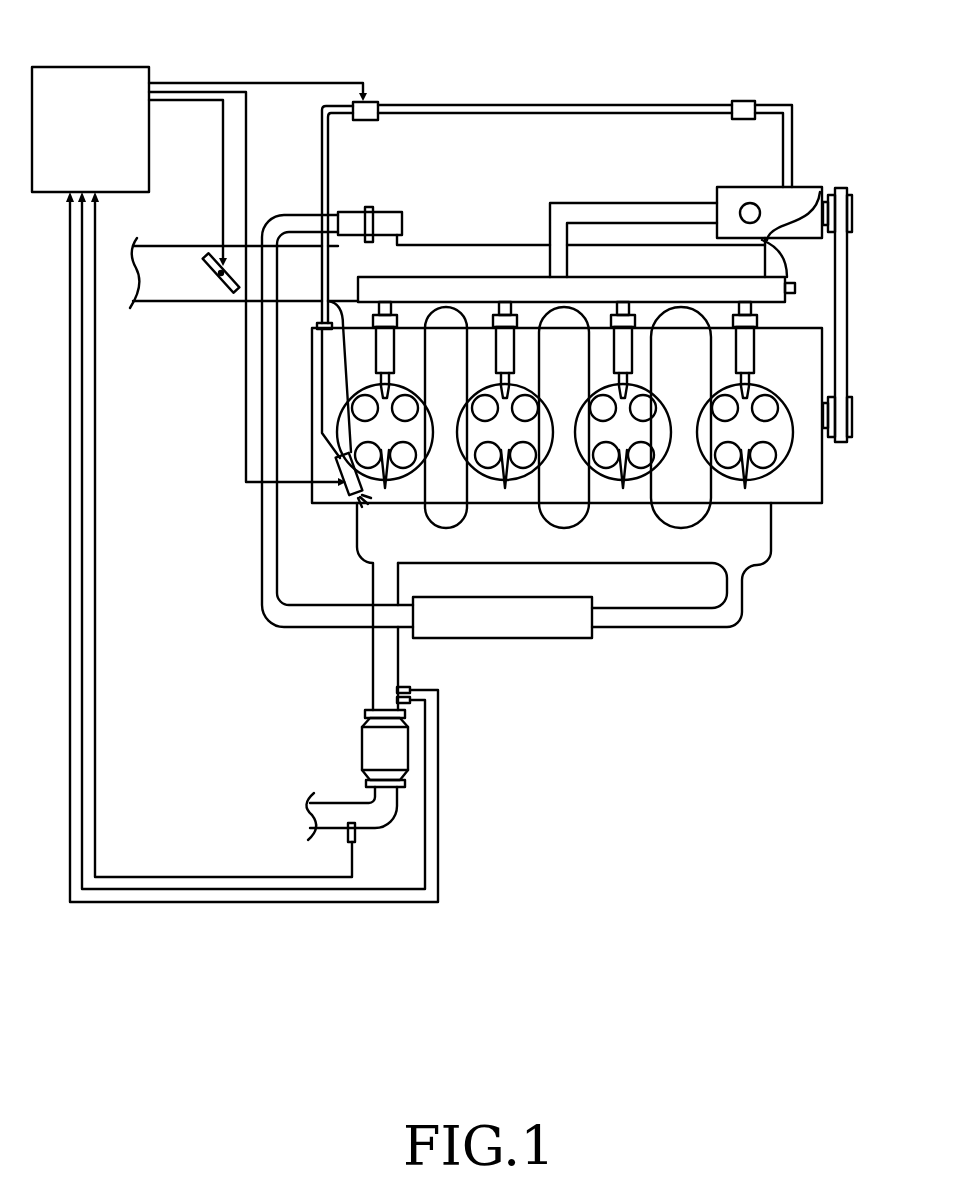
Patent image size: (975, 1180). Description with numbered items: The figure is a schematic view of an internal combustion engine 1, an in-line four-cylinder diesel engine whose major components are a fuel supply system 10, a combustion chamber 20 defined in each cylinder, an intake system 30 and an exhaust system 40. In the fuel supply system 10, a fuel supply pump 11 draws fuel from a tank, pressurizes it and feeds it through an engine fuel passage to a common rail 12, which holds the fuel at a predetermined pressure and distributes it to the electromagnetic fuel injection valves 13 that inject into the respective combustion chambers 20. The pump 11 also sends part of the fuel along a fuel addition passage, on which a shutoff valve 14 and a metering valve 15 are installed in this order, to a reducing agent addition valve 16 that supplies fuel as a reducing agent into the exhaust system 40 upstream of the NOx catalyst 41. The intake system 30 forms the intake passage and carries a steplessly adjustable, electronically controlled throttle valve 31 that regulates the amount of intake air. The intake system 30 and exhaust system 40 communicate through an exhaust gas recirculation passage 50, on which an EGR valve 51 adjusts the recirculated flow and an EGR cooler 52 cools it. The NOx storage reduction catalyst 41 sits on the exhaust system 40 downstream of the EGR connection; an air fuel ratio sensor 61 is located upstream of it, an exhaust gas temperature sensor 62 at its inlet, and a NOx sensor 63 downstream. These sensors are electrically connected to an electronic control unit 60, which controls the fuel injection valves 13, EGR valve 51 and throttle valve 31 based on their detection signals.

The internal combustion engine 1 is at (841, 480).
The fuel supply system 10 is at (688, 170).
The fuel supply pump 11 is at (740, 187).
The common rail 12 is at (816, 190).
The fuel injection valves 13 is at (389, 348).
The shutoff valve 14 is at (744, 100).
The metering valve 15 is at (352, 103).
The reducing agent addition valve 16 is at (348, 490).
The combustion chamber 20 is at (418, 443).
The intake system 30 is at (481, 240).
The throttle valve 31 is at (218, 257).
The exhaust system 40 is at (340, 719).
The NOx catalyst 41 is at (365, 761).
The exhaust gas recirculation passage 50 is at (745, 597).
The exhaust gas recirculation valve 51 is at (397, 212).
The exhaust gas recirculation cooler 52 is at (447, 640).
The electronic control unit 60 is at (93, 67).
The air fuel ratio sensor 61 is at (402, 688).
The exhaust gas temperature sensor 62 is at (410, 702).
The NOx sensor 63 is at (355, 828).